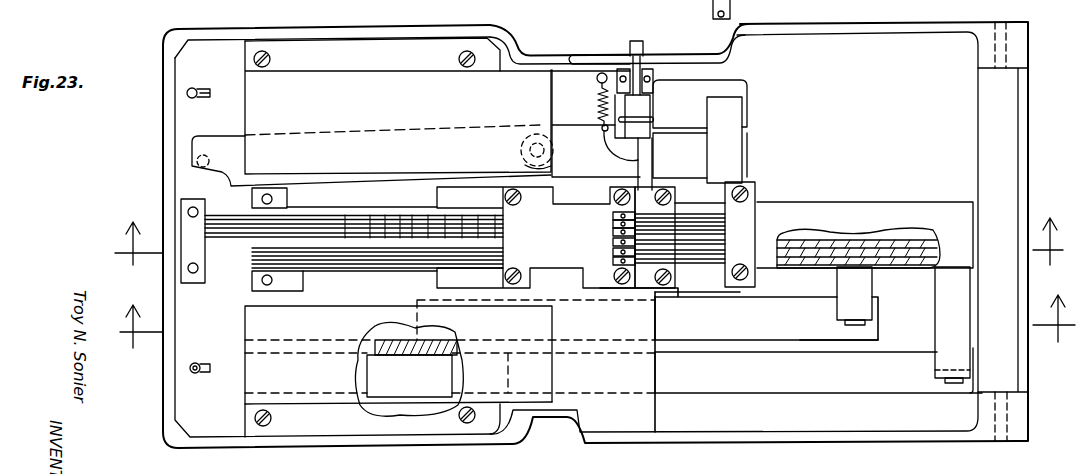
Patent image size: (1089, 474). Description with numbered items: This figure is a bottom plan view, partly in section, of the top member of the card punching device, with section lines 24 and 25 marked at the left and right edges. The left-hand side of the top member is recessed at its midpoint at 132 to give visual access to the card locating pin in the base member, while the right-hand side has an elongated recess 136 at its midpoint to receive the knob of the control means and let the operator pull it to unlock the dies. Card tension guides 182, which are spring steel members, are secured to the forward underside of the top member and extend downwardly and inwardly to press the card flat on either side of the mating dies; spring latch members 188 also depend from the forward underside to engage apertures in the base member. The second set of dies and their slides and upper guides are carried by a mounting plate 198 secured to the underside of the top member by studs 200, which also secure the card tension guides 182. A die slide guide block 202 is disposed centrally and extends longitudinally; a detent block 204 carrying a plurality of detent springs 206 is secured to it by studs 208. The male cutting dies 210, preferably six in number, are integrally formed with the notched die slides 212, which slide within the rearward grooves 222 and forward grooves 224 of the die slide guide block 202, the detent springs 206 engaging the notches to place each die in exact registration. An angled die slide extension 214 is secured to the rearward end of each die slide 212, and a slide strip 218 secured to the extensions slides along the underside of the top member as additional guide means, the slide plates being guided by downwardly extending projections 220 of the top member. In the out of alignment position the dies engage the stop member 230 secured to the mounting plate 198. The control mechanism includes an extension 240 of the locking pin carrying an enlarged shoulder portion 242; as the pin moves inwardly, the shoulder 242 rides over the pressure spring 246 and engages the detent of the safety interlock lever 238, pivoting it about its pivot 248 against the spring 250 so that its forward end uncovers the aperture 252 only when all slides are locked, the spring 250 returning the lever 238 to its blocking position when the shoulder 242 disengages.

The section line 24 is at (596, 313).
The section line 25 is at (589, 234).
The recess 132 is at (535, 430).
The elongated recess 136 is at (523, 52).
The card tension guides 182 is at (430, 112).
The spring latch members 188 is at (203, 85).
The mounting plate 198 is at (658, 418).
The studs 200 is at (271, 60).
The die slide guide block 202 is at (590, 251).
The detent block 204 is at (747, 230).
The detent springs 206 is at (712, 245).
The studs 208 is at (752, 183).
The male cutting dies 210 is at (239, 209).
The die slides 212 is at (322, 222).
The angled die slide extension 214 is at (723, 157).
The slide strip 218 is at (908, 380).
The projections 220 is at (409, 357).
The grooves 222 is at (930, 262).
The grooves 224 is at (425, 250).
The stop member 230 is at (206, 264).
The safety interlock lever 238 is at (223, 136).
The extension 240 is at (643, 44).
The enlarged shoulder portion 242 is at (603, 112).
The pressure spring 246 is at (652, 92).
The pivot 248 is at (521, 150).
The spring 250 is at (628, 107).
The aperture 252 is at (195, 165).